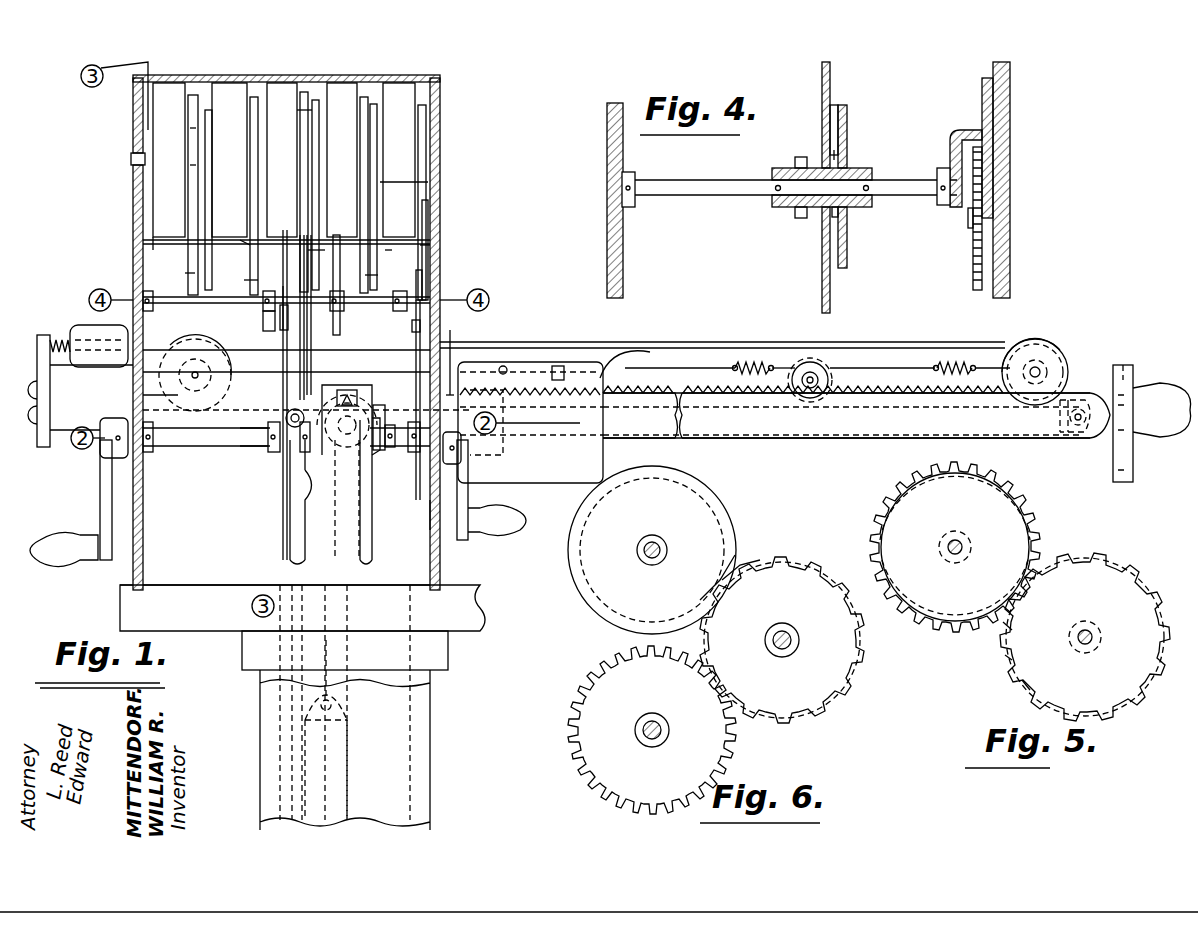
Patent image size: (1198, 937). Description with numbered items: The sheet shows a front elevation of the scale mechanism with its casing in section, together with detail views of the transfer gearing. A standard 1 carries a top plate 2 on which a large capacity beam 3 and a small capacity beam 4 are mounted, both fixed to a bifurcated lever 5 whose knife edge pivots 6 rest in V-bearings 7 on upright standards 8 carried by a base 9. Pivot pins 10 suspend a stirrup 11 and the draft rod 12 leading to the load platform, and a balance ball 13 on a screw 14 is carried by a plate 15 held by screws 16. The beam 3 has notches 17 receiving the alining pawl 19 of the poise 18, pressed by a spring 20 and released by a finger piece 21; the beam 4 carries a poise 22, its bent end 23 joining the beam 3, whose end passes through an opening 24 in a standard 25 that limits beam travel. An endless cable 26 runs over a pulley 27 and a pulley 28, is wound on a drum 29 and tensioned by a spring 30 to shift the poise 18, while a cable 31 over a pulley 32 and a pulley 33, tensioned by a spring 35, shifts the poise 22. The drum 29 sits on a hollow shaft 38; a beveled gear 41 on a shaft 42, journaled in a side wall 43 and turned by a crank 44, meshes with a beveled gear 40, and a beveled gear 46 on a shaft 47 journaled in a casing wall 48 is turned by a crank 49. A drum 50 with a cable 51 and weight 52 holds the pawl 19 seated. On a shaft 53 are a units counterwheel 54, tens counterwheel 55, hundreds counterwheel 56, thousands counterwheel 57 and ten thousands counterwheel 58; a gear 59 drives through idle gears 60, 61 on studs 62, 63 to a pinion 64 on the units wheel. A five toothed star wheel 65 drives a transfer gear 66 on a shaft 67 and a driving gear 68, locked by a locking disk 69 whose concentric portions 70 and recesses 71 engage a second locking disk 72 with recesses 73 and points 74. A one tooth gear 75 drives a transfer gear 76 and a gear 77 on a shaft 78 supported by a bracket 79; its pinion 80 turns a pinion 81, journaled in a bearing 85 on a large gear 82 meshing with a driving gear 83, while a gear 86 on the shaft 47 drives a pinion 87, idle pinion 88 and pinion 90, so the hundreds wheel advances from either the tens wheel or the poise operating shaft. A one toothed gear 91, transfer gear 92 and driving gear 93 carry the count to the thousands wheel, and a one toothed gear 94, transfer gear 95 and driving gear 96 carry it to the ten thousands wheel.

In FIG. 1, the standard 1 is at (415, 730).
In FIG. 1, the top plate 2 is at (470, 618).
In FIG. 1, the large capacity beam 3 is at (748, 438).
In FIG. 1, the small capacity beam 4 is at (845, 438).
In FIG. 1, the bifurcated lever 5 is at (240, 440).
In FIG. 1, the knife edge pivots 6 is at (360, 393).
In FIG. 1, the V-bearings 7 is at (340, 405).
In FIG. 1, the upright standards 8 is at (366, 515).
In FIG. 1, the base 9 is at (385, 580).
In FIG. 1, the pivot pins 10 is at (288, 412).
In FIG. 1, the stirrup 11 is at (290, 462).
In FIG. 1, the draft rod 12 is at (295, 516).
In FIG. 1, the balance ball 13 is at (78, 345).
In FIG. 1, the screw 14 is at (55, 345).
In FIG. 1, the plate 15 is at (40, 352).
In FIG. 1, the screws 16 is at (30, 395).
In FIG. 1, the V-shaped notch 17 is at (652, 395).
In FIG. 1, the poise 18 is at (530, 422).
In FIG. 1, the alining pawl 19 is at (455, 356).
In FIG. 1, the spring 20 is at (560, 362).
In FIG. 1, the finger piece 21 is at (625, 365).
In FIG. 1, the poise 22 is at (495, 455).
In FIG. 1, the bent-over end 23 is at (1060, 416).
In FIG. 1, the opening 24 is at (1125, 406).
In FIG. 1, the standard 25 is at (1128, 462).
In FIG. 1, the endless cable 26 is at (795, 342).
In FIG. 1, the pulley 27 is at (1042, 362).
In FIG. 1, the pulley 28 is at (180, 365).
In FIG. 1, the drum 29 is at (349, 500).
In FIG. 1, the spring 30 is at (955, 360).
In FIG. 1, the cable 31 is at (698, 366).
In FIG. 1, the pulley 32 is at (825, 375).
In FIG. 1, the pulley 33 is at (160, 407).
In FIG. 1, the spring 35 is at (748, 362).
In FIG. 1, the hollow shaft 38 is at (375, 450).
In FIG. 1, the beveled gear 40 is at (395, 420).
In FIG. 1, the beveled gear 41 is at (402, 428).
In FIG. 1, the shaft 42 is at (407, 444).
In FIG. 1, the frame member 43 is at (430, 510).
In FIG. 4, the frame member 43 is at (1010, 160).
In FIG. 1, the crank 44 is at (495, 520).
In FIG. 1, the beveled gear 46 is at (300, 462).
In FIG. 1, the shaft 47 is at (178, 440).
In FIG. 1, the frame member 48 is at (143, 525).
In FIG. 4, the frame member 48 is at (623, 243).
In FIG. 1, the crank 49 is at (103, 518).
In FIG. 1, the drum 50 is at (351, 459).
In FIG. 1, the cable 51 is at (328, 668).
In FIG. 1, the weight 52 is at (340, 730).
In FIG. 1, the shaft 53 is at (440, 157).
In FIG. 6, the shaft 53 is at (656, 545).
In FIG. 5, the shaft 53 is at (950, 552).
In FIG. 1, the units counterwheel 54 is at (405, 97).
In FIG. 1, the tens counterwheel 55 is at (352, 90).
In FIG. 1, the hundreds counterwheel 56 is at (290, 90).
In FIG. 1, the thousands counterwheel 57 is at (236, 90).
In FIG. 1, the ten thousands counterwheel 58 is at (172, 90).
In FIG. 1, the gear 59 is at (407, 400).
In FIG. 1, the idle gear 60 is at (424, 275).
In FIG. 4, the idle gear 60 is at (973, 258).
In FIG. 1, the idle gear 61 is at (428, 246).
In FIG. 1, the stud 62 is at (412, 328).
In FIG. 4, the stud 62 is at (968, 220).
In FIG. 1, the stud 63 is at (428, 220).
In FIG. 1, the pinion 64 is at (428, 145).
In FIG. 1, the five toothed star wheel 65 is at (366, 105).
In FIG. 1, the transfer gear 66 is at (390, 265).
In FIG. 5, the transfer gear 66 is at (1095, 560).
In FIG. 1, the shaft 67 is at (160, 252).
In FIG. 6, the shaft 67 is at (786, 645).
In FIG. 5, the shaft 67 is at (1085, 645).
In FIG. 1, the driving gear 68 is at (440, 180).
In FIG. 1, the locking disk 69 is at (395, 80).
In FIG. 5, the locking disk 69 is at (995, 522).
In FIG. 5, the concentric peripheral portions 70 is at (880, 520).
In FIG. 5, the recesses 71 is at (982, 475).
In FIG. 1, the second locking disk 72 is at (402, 245).
In FIG. 5, the second locking disk 72 is at (1105, 590).
In FIG. 5, the recesses 73 is at (1003, 628).
In FIG. 5, the points 74 is at (1005, 657).
In FIG. 1, the one tooth gear 75 is at (305, 100).
In FIG. 6, the one tooth gear 75 is at (725, 577).
In FIG. 6, the transfer gear 76 is at (795, 560).
In FIG. 1, the gear 77 is at (312, 360).
In FIG. 4, the gear 77 is at (847, 248).
In FIG. 6, the gear 77 is at (730, 752).
In FIG. 1, the shaft 78 is at (195, 310).
In FIG. 4, the shaft 78 is at (898, 185).
In FIG. 6, the shaft 78 is at (660, 722).
In FIG. 1, the bracket 79 is at (405, 295).
In FIG. 4, the bracket 79 is at (955, 132).
In FIG. 1, the pinion 80 is at (312, 320).
In FIG. 4, the pinion 80 is at (834, 105).
In FIG. 1, the pinion 81 is at (331, 245).
In FIG. 1, the large gear 82 is at (311, 385).
In FIG. 4, the large gear 82 is at (822, 262).
In FIG. 1, the driving gear 83 is at (309, 95).
In FIG. 1, the bearing 85 is at (295, 272).
In FIG. 1, the gear 86 is at (283, 360).
In FIG. 1, the pinion 87 is at (284, 310).
In FIG. 4, the pinion 87 is at (801, 218).
In FIG. 1, the idle pinion 88 is at (283, 290).
In FIG. 1, the pinion 90 is at (265, 285).
In FIG. 1, the one toothed transfer gear 91 is at (254, 105).
In FIG. 1, the transfer gear 92 is at (240, 280).
In FIG. 1, the driving gear 93 is at (250, 245).
In FIG. 1, the one toothed gear 94 is at (179, 128).
In FIG. 1, the transfer gear 95 is at (179, 273).
In FIG. 1, the driving gear 96 is at (179, 165).